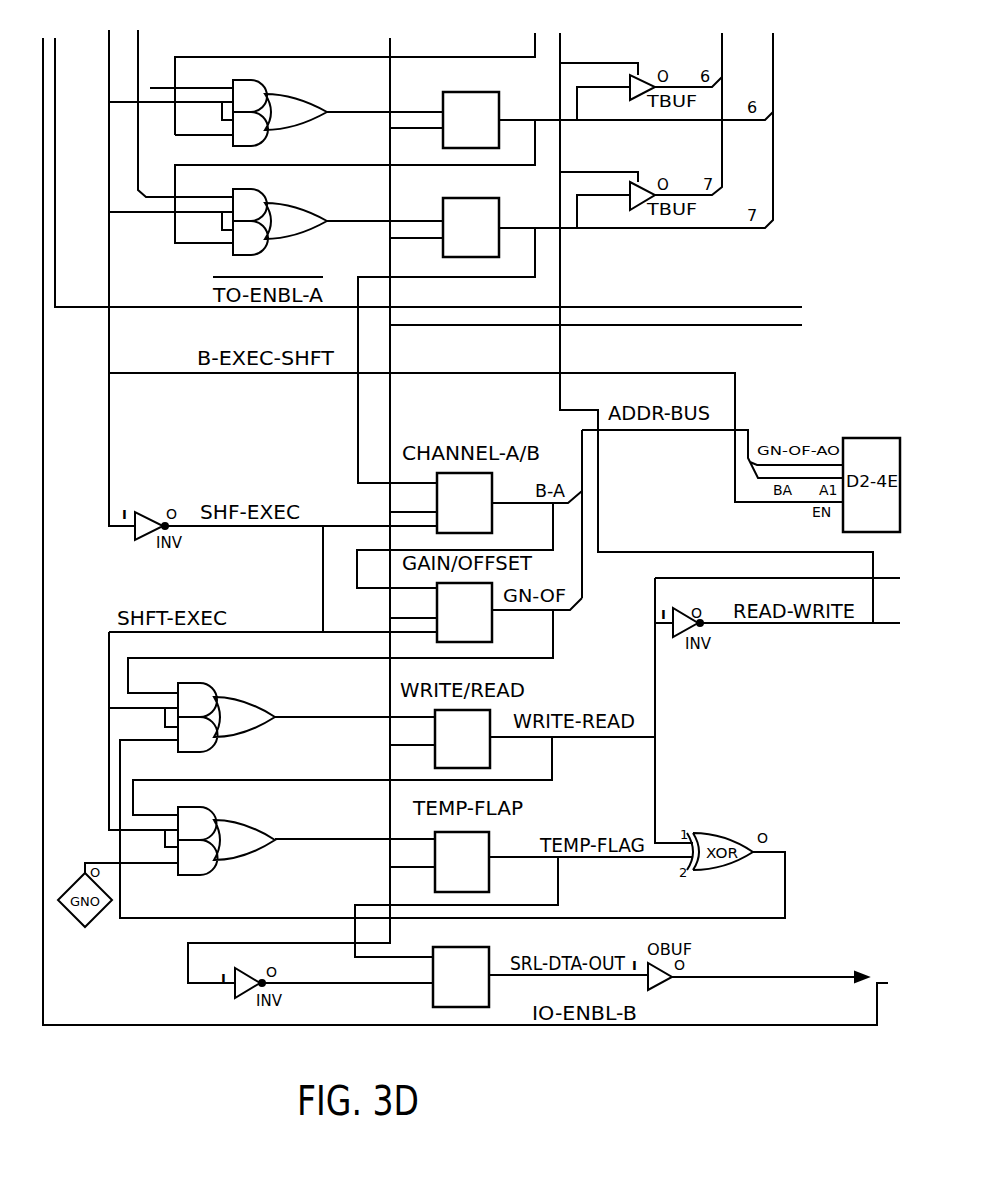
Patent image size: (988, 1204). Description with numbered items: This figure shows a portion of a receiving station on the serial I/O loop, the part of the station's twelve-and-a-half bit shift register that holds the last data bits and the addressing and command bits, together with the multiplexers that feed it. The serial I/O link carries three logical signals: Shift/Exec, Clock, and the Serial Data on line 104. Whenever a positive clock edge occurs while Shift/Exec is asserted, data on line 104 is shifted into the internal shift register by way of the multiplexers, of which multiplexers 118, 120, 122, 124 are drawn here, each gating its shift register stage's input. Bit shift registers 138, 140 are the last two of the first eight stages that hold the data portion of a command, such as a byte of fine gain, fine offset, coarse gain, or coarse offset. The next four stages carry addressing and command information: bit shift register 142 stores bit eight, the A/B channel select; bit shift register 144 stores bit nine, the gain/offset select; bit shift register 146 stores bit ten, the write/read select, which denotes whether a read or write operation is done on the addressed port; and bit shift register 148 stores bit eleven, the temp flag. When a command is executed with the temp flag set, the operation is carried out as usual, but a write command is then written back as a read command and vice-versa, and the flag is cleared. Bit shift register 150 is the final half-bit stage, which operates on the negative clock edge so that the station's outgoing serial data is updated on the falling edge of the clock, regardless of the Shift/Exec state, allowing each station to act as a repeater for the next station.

The multiplexer 118 is at (338, 108).
The multiplexer 120 is at (338, 216).
The multiplexer 122 is at (262, 735).
The multiplexer 124 is at (262, 857).
The bit shift register 138 is at (449, 106).
The bit shift register 140 is at (452, 215).
The bit shift register 142 is at (492, 518).
The bit shift register 144 is at (492, 628).
The bit shift register 146 is at (490, 758).
The bit shift register 148 is at (489, 878).
The bit shift register 150 is at (433, 993).
The serial data line 104 is at (789, 979).